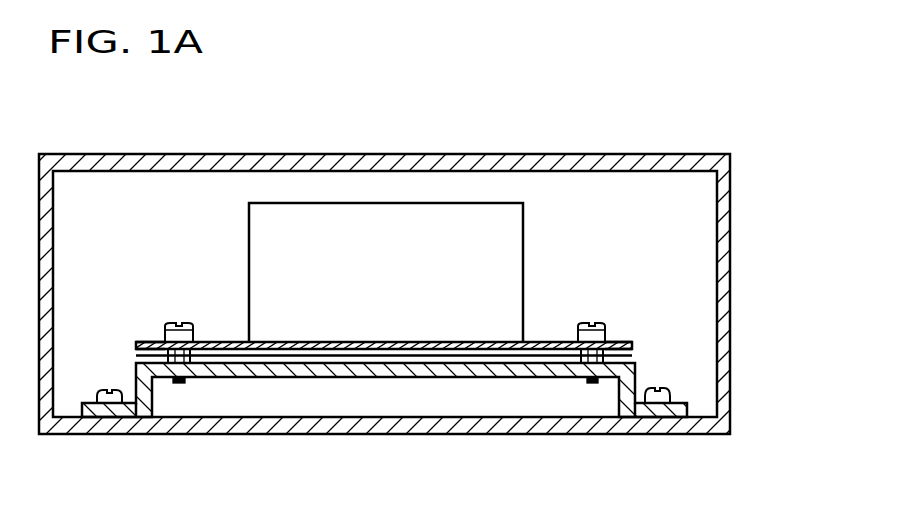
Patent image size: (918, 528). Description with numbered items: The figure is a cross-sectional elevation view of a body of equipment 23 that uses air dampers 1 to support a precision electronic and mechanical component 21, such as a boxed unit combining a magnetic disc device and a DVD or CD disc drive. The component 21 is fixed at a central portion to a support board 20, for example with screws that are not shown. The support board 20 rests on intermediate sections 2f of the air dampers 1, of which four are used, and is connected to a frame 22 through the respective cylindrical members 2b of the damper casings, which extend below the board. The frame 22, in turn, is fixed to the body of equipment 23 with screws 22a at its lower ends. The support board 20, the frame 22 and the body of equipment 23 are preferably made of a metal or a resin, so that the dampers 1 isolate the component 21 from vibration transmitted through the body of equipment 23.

The air damper 1 is at (163, 324).
The cylindrical member 2b is at (160, 357).
The intermediate section 2f is at (163, 341).
The support board 20 is at (533, 341).
The precision electronic and mechanical component 21 is at (523, 226).
The frame 22 is at (636, 377).
The screw 22a is at (102, 393).
The body of equipment 23 is at (730, 283).